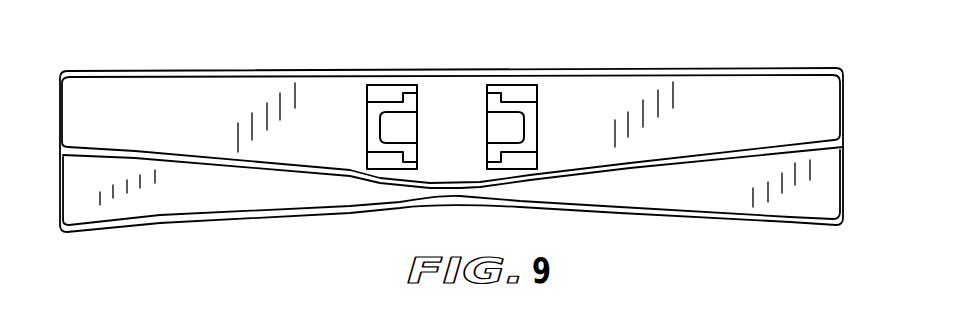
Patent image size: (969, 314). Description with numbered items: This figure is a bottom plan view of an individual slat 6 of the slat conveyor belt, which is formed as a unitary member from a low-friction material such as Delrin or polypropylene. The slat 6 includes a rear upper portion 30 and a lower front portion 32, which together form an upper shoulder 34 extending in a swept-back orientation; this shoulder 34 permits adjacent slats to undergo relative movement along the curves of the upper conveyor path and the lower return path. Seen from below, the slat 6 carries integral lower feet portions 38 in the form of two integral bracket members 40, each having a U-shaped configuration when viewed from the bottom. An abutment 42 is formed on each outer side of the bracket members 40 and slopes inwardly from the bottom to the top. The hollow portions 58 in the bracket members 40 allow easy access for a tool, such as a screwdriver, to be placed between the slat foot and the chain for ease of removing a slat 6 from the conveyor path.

The slat 6 is at (450, 110).
The rear upper portion 30 is at (563, 95).
The lower front portion 32 is at (170, 198).
The upper shoulder 34 is at (655, 168).
The lower feet portions 38 is at (373, 108).
The bracket members 40 is at (397, 125).
The abutment 42 is at (370, 147).
The hollow portions 58 is at (487, 128).